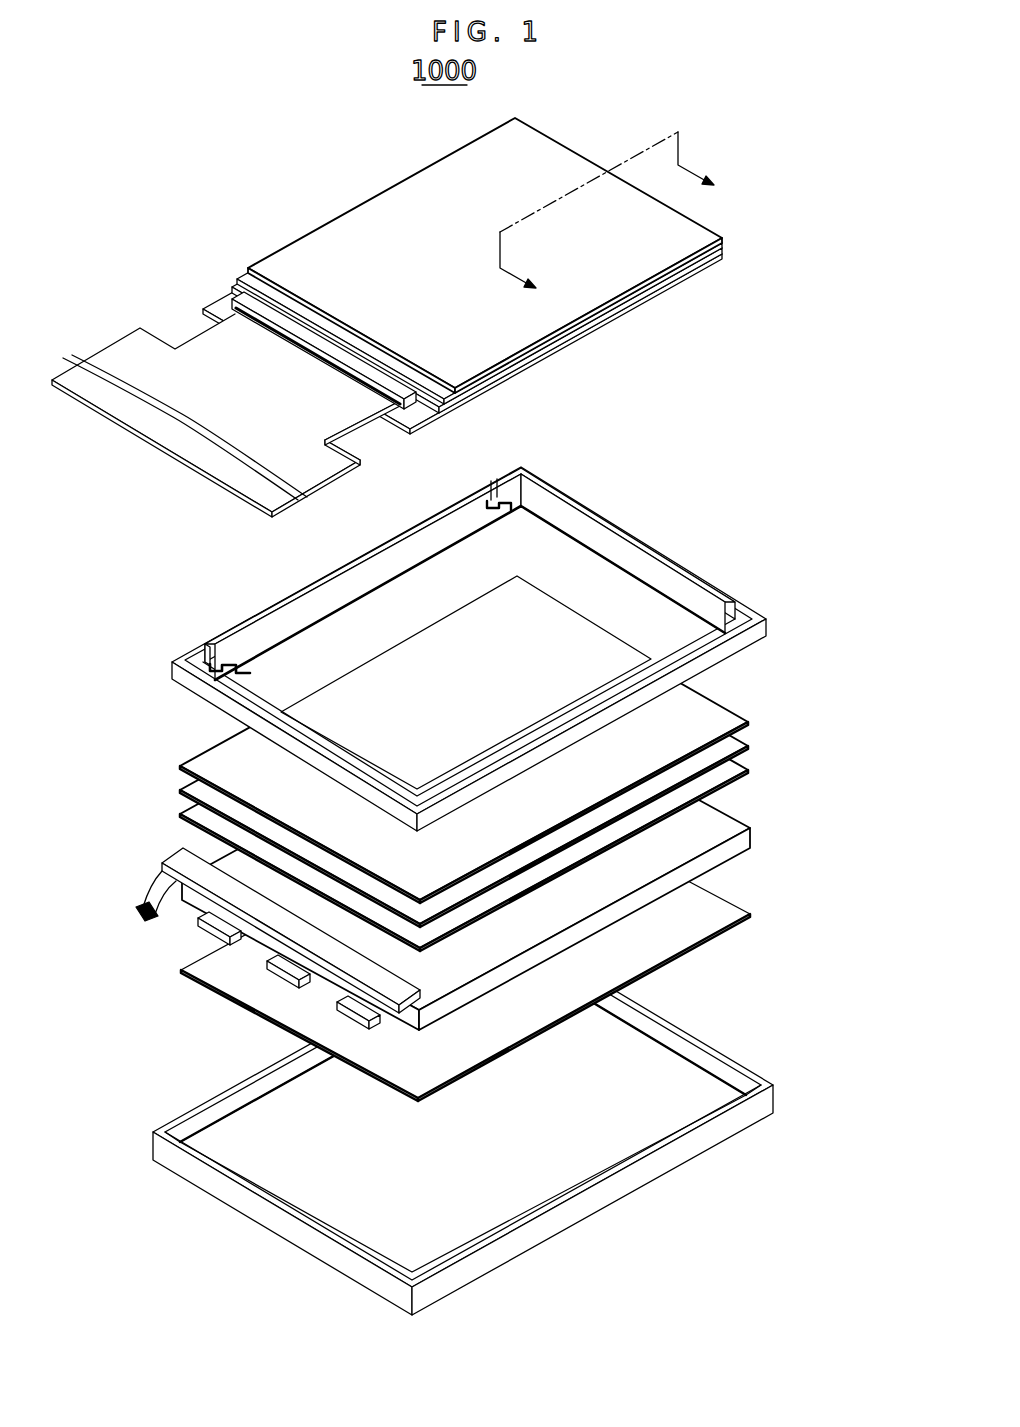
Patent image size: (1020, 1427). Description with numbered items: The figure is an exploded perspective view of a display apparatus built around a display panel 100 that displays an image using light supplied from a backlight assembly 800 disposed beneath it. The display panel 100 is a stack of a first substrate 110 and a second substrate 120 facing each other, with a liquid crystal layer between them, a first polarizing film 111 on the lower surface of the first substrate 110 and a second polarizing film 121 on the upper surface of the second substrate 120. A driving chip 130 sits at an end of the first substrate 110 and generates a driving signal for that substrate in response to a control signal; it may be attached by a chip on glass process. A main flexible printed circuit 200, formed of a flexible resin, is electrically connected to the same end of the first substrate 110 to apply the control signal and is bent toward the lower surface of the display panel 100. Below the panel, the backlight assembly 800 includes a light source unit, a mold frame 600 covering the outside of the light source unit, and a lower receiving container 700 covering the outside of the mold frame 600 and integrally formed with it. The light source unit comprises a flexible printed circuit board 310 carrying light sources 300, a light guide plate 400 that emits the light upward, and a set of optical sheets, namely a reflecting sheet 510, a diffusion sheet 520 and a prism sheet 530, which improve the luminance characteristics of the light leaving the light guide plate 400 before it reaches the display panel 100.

The display panel 100 is at (517, 264).
The first substrate 110 is at (725, 255).
The first polarizing film 111 is at (725, 262).
The second substrate 120 is at (725, 247).
The second polarizing film 121 is at (725, 240).
The driving chip 130 is at (240, 297).
The main flexible printed circuit 200 is at (122, 368).
The light sources 300 is at (197, 938).
The flexible printed circuit board 310 is at (178, 860).
The light guide plate 400 is at (749, 811).
The reflecting sheet 510 is at (747, 896).
The diffusion sheet 520 is at (751, 763).
The prism sheet 530 is at (751, 717).
The mold frame 600 is at (758, 603).
The lower receiving container 700 is at (726, 1032).
The backlight assembly 800 is at (829, 542).